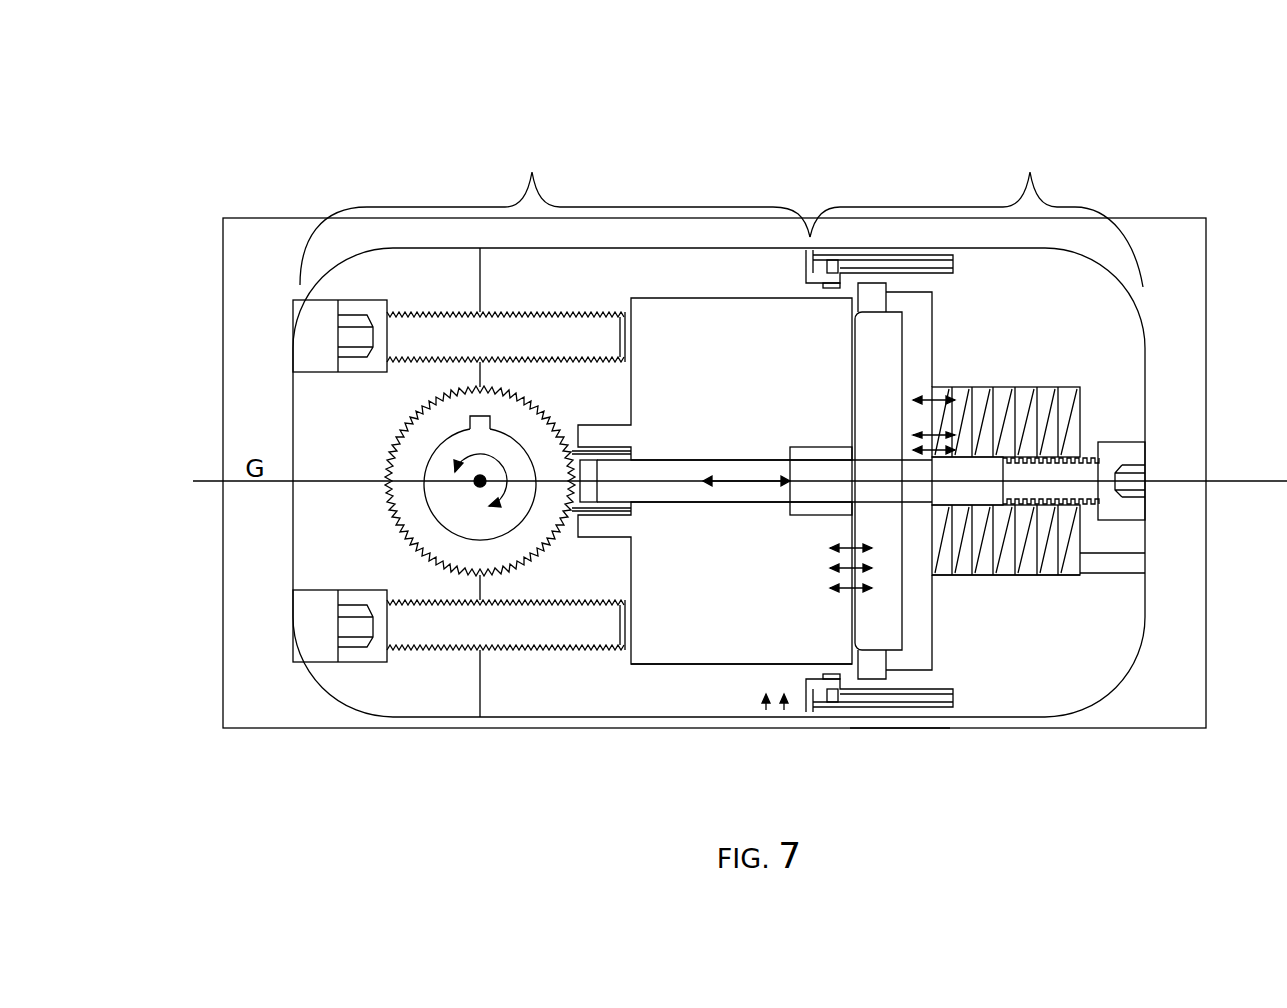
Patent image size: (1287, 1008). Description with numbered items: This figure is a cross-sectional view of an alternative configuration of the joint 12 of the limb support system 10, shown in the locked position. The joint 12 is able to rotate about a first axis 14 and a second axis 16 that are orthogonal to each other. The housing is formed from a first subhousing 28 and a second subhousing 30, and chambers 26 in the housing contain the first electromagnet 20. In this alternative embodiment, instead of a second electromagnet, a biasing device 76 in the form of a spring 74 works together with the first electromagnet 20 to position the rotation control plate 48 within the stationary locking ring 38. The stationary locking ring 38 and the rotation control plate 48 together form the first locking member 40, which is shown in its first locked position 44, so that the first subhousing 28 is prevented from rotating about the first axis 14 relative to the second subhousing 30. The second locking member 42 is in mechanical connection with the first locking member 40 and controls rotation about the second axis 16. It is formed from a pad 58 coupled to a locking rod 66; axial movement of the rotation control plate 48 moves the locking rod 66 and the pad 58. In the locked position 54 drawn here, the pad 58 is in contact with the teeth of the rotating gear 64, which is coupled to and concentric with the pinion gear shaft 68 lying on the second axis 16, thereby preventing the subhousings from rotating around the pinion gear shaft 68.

The limb support system 10 is at (748, 104).
The joint 12 is at (905, 104).
The first axis 14 is at (1238, 481).
The second axis 16 is at (477, 490).
The first electromagnet 20 is at (698, 627).
The chambers 26 is at (757, 666).
The first subhousing 28 is at (976, 213).
The second subhousing 30 is at (555, 212).
The stationary locking ring 38 is at (843, 712).
The first locking member 40 is at (992, 360).
The second locking member 42 is at (342, 415).
The first locked position 44 is at (897, 737).
The rotation control plate 48 is at (882, 605).
The locked position 54 is at (567, 575).
The pad 58 is at (580, 508).
The rotating gear 64 is at (410, 462).
The locking rod 66 is at (673, 444).
The pinion gear shaft 68 is at (473, 522).
The spring 74 is at (1016, 555).
The biasing device 76 is at (1043, 605).